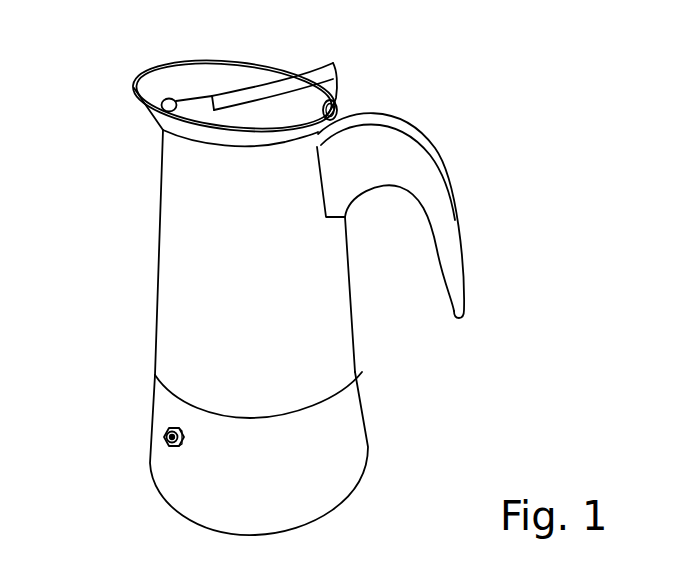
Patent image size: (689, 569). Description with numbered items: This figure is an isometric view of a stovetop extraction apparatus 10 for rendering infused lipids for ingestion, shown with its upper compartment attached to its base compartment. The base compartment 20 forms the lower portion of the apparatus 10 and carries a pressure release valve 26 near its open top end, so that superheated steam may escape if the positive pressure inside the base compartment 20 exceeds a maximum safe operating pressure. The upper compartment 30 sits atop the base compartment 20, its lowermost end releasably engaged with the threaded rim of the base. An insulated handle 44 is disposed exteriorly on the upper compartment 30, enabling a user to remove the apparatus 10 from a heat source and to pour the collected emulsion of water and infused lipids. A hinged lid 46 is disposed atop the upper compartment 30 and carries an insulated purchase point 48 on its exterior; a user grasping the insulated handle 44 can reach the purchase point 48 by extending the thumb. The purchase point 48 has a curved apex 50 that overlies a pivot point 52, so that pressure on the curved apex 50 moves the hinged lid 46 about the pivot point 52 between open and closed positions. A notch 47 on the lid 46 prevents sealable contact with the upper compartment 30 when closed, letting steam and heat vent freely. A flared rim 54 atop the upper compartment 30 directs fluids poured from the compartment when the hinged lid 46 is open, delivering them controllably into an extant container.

The stovetop extraction apparatus 10 is at (553, 122).
The base compartment 20 is at (368, 447).
The pressure release valve 26 is at (164, 446).
The upper compartment 30 is at (154, 312).
The insulated handle 44 is at (461, 256).
The hinged lid 46 is at (193, 102).
The notch 47 is at (133, 85).
The insulated purchase point 48 is at (325, 78).
The curved apex 50 is at (337, 65).
The pivot point 52 is at (340, 108).
The flared rim 54 is at (158, 120).